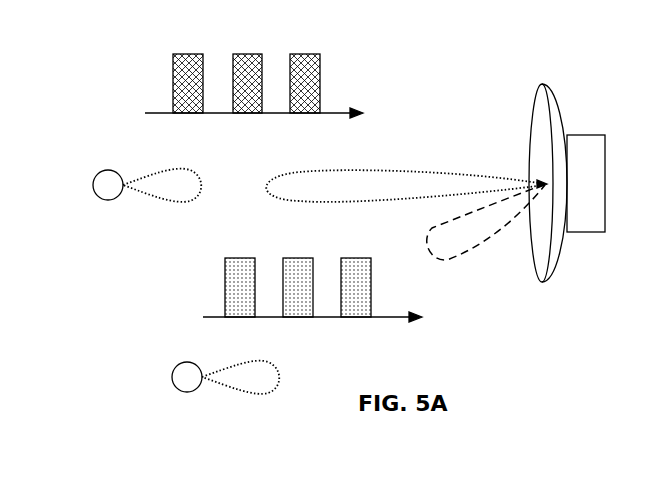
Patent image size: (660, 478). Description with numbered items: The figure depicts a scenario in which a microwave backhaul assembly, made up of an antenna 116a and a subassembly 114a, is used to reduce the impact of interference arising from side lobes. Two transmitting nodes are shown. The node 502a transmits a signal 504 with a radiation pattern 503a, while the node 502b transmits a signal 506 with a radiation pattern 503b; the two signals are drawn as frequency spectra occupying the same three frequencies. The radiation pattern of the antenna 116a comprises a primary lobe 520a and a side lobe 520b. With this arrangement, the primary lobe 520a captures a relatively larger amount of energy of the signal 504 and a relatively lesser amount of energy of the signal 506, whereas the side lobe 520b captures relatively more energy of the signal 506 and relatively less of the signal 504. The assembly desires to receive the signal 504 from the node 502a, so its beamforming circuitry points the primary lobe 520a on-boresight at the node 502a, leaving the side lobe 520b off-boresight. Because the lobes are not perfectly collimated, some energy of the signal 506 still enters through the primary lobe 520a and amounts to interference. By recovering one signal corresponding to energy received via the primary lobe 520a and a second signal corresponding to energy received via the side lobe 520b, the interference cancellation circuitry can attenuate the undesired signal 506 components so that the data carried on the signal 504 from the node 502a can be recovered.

The signal 504 is at (122, 78).
The signal 506 is at (183, 275).
The node 502a is at (108, 170).
The radiation pattern 503a is at (160, 170).
The node 502b is at (187, 362).
The radiation pattern 503b is at (252, 392).
The primary lobe 520a is at (366, 172).
The side lobe 520b is at (428, 242).
The antenna 116a is at (541, 86).
The subassembly 114a is at (588, 135).